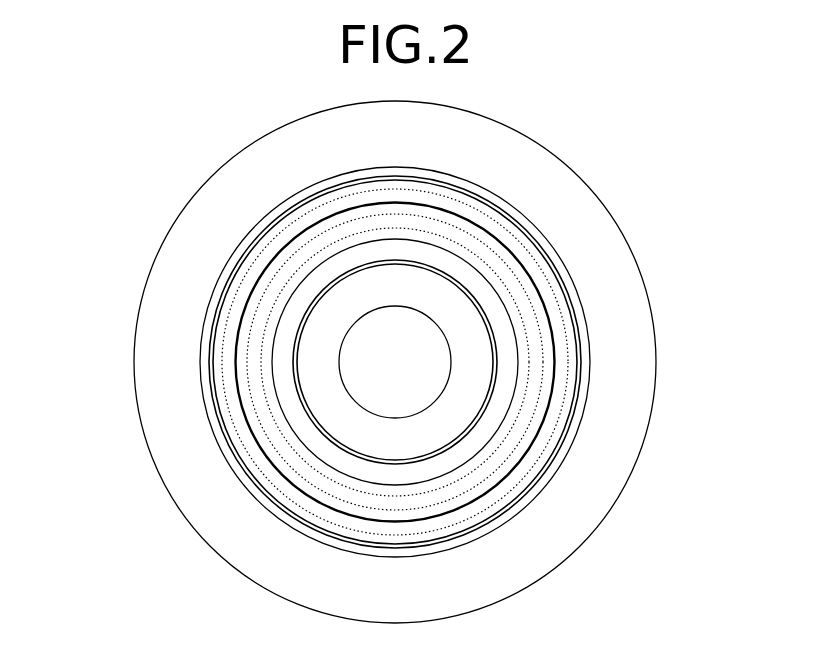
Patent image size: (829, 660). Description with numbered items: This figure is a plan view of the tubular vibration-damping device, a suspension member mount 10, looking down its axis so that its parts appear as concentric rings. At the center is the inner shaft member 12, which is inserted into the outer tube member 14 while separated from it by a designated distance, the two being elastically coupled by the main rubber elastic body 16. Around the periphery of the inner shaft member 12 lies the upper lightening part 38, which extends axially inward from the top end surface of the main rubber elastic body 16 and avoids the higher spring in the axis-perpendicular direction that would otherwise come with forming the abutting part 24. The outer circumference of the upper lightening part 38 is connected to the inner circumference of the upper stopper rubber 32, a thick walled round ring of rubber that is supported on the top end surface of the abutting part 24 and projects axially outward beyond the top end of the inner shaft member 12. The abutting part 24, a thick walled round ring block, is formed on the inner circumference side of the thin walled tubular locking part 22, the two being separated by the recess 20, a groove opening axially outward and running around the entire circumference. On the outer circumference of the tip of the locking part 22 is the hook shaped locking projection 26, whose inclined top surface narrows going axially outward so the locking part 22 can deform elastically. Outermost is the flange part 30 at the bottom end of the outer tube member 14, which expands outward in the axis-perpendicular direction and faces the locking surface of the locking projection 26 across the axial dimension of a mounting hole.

The suspension member mount 10 is at (608, 113).
The inner shaft member 12 is at (340, 273).
The outer tube member 14 is at (662, 375).
The main rubber elastic body 16 is at (297, 422).
The recess 20 is at (220, 315).
The locking part 22 is at (568, 263).
The abutting part 24 is at (532, 457).
The locking projection 26 is at (503, 518).
The flange part 30 is at (155, 417).
The upper stopper rubber 32 is at (390, 220).
The upper lightening part 38 is at (520, 366).